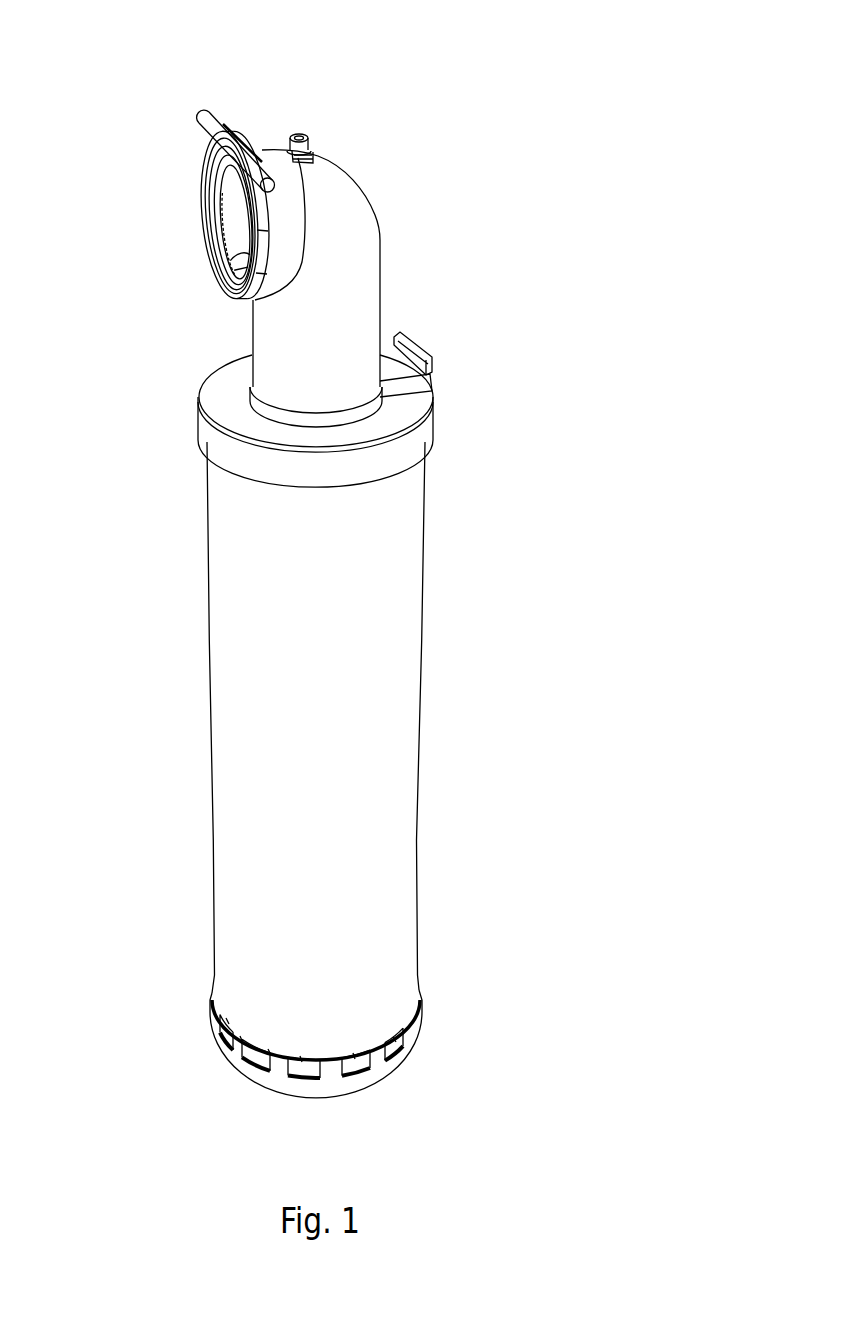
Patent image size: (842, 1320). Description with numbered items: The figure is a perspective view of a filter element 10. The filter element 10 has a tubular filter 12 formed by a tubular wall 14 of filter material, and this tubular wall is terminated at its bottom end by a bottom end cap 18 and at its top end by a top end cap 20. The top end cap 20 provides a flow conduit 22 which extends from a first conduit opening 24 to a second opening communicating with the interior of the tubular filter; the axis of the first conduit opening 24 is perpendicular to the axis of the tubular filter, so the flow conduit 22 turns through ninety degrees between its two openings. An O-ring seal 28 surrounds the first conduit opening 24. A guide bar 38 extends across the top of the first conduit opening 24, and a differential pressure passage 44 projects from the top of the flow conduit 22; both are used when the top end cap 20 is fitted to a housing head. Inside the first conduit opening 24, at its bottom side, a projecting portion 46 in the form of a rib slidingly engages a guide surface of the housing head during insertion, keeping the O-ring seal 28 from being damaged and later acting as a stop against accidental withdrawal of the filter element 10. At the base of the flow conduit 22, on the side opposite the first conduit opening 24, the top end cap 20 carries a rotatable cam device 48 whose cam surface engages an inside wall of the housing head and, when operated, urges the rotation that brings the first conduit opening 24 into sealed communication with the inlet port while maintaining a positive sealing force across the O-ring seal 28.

The filter element 10 is at (540, 103).
The tubular filter 12 is at (196, 624).
The tubular wall 14 is at (233, 548).
The bottom end cap 18 is at (232, 1058).
The top end cap 20 is at (355, 158).
The flow conduit 22 is at (368, 258).
The first conduit opening 24 is at (228, 215).
The O-ring seal 28 is at (239, 283).
The guide bar 38 is at (217, 127).
The differential pressure passage 44 is at (298, 134).
The projecting portion 46 is at (241, 265).
The rotatable cam device 48 is at (420, 348).